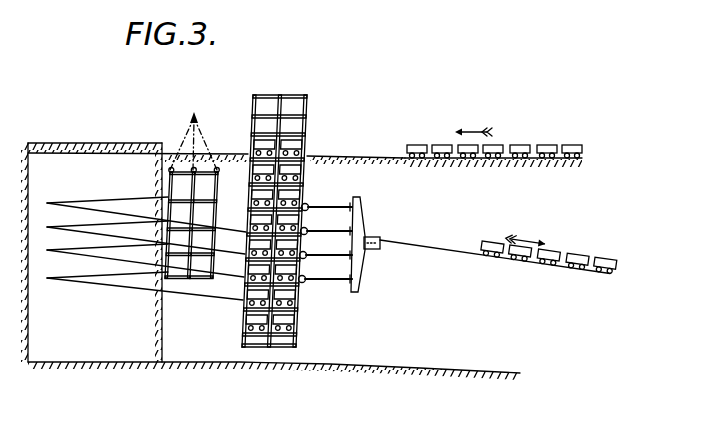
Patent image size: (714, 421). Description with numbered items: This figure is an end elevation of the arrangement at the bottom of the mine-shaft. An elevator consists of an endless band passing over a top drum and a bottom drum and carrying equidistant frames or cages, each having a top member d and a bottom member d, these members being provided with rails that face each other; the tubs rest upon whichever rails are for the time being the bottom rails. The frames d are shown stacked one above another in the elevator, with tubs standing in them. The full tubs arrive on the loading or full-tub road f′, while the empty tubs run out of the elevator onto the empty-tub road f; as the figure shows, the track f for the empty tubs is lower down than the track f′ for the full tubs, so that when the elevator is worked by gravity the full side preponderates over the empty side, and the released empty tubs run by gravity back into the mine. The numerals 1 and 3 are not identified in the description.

The empty-tub road f is at (328, 231).
The guide frame left upright 1 is at (180, 223).
The guide frame right upright 3 is at (204, 223).
The frame or cage member d is at (305, 144).
The loading or full-tub road f′ is at (358, 158).